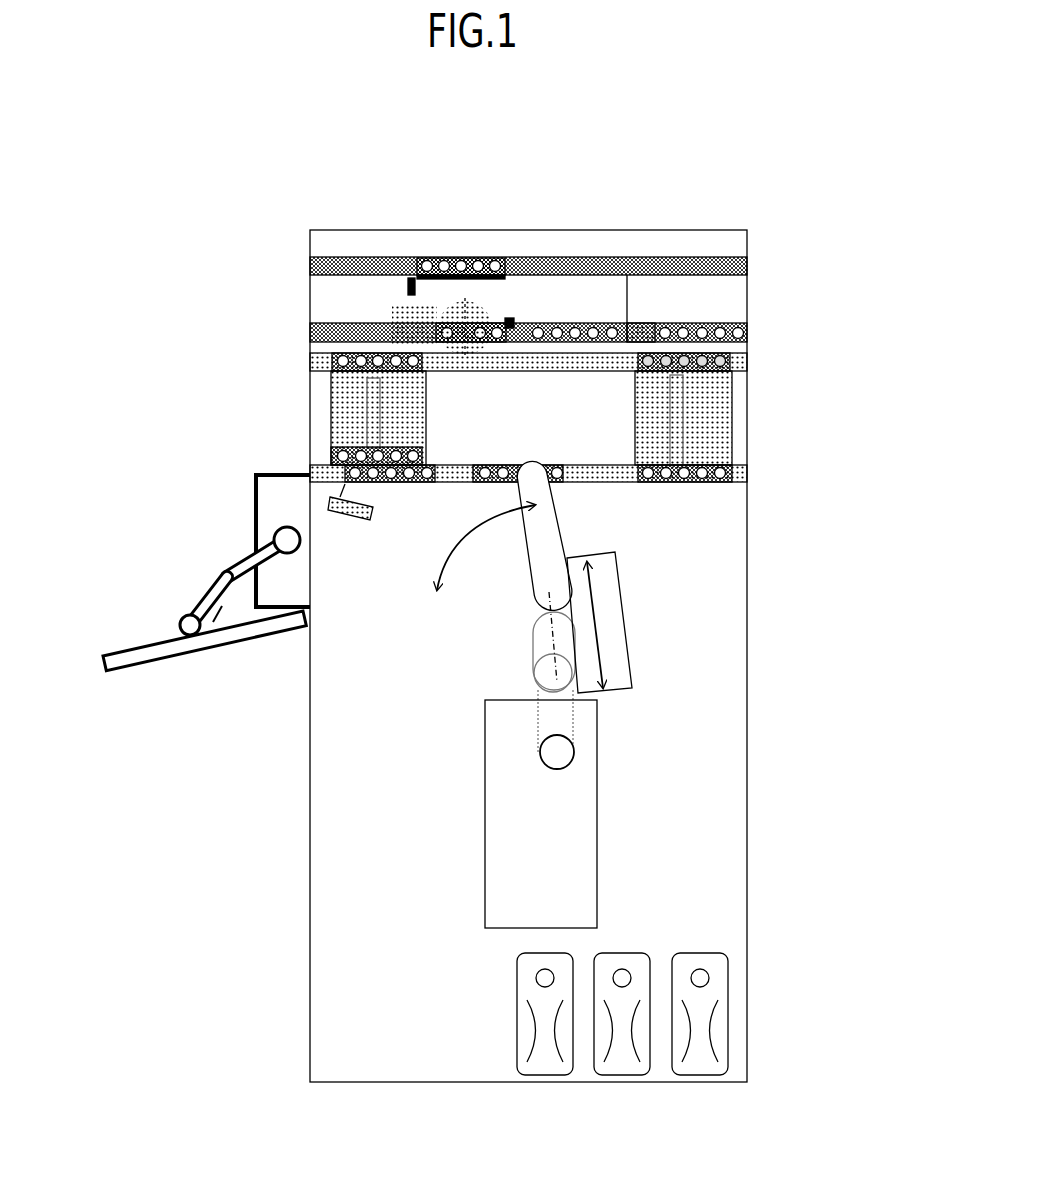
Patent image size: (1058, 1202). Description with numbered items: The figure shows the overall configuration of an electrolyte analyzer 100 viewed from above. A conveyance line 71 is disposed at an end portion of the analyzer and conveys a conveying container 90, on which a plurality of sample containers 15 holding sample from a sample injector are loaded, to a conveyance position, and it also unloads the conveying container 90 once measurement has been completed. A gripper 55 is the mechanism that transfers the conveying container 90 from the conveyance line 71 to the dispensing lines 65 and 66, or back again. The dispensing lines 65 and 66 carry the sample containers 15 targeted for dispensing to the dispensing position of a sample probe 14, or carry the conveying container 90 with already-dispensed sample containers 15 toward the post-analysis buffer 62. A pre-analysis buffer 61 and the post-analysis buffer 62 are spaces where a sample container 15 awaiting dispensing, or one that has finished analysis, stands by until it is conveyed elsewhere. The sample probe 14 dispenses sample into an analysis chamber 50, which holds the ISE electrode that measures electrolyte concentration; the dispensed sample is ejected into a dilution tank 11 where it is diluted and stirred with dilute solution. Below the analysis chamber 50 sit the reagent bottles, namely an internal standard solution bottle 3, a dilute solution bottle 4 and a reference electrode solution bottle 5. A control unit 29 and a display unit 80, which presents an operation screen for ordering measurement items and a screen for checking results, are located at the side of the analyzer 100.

The electrolyte analyzer 100 is at (131, 226).
The conveyance line 71 is at (747, 262).
The sample container 15 is at (446, 265).
The conveying container 90 is at (416, 262).
The gripper 55 is at (410, 323).
The dispensing line 65 is at (747, 365).
The pre-analysis buffer 61 is at (338, 405).
The post-analysis buffer 62 is at (735, 416).
The dispensing line 66 is at (747, 473).
The sample probe 14 is at (552, 537).
The dilution tank 11 is at (553, 740).
The analysis chamber 50 is at (485, 905).
The internal standard solution bottle 3 is at (542, 1058).
The dilute solution bottle 4 is at (620, 1058).
The reference electrode solution bottle 5 is at (697, 1058).
The control unit 29 is at (256, 505).
The display unit 80 is at (162, 650).